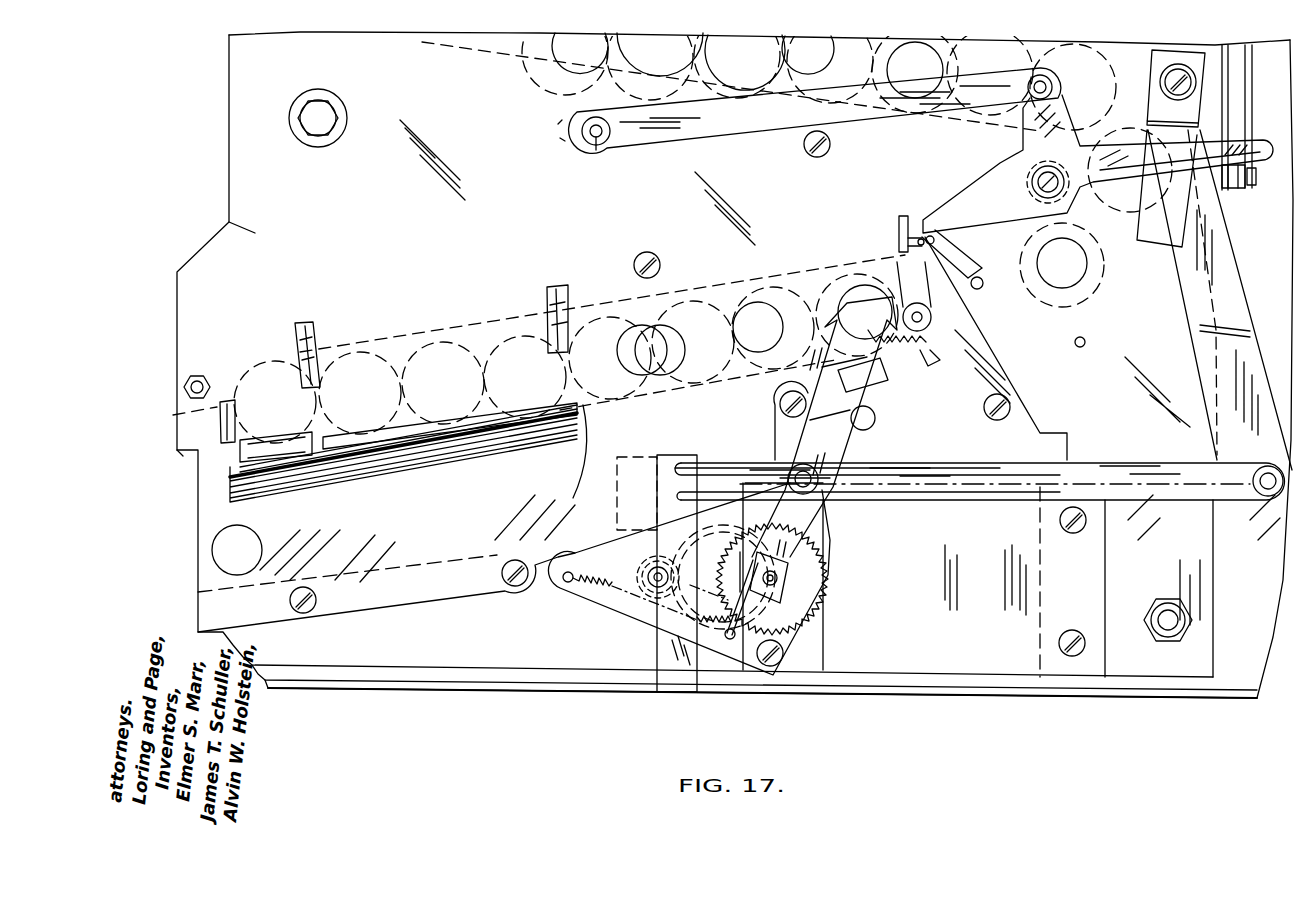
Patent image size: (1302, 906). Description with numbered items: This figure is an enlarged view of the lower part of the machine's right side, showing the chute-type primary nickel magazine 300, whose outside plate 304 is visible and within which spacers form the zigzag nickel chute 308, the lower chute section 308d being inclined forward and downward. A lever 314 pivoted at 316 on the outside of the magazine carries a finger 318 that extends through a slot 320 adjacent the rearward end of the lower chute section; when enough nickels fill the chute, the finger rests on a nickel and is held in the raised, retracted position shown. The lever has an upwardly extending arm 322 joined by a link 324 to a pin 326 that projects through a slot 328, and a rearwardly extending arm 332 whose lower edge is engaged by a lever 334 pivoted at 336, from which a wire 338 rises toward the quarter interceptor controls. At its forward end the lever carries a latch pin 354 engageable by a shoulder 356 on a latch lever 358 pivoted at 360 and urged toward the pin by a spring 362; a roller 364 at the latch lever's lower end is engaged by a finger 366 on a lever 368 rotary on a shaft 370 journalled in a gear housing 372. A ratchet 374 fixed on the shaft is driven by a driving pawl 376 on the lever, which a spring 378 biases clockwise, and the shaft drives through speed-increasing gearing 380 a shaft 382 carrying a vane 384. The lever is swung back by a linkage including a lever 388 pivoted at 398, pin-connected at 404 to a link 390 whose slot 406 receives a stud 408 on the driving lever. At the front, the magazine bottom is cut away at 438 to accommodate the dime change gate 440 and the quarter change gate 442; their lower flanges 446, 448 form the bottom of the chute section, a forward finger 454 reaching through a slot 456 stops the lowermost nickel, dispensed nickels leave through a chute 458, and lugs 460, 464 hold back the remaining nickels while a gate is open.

The primary nickel magazine 300 is at (219, 143).
The outside plate 304 is at (229, 222).
The zigzag nickel chute 308 is at (535, 62).
The lower chute section 308d is at (465, 330).
The lever 314 is at (998, 158).
The pivot 316 is at (1062, 190).
The finger 318 is at (950, 247).
The slot 320 is at (983, 283).
The upwardly extending arm 322 is at (1052, 90).
The link 324 is at (718, 128).
The pin 326 is at (598, 146).
The slot 328 is at (558, 140).
The rearwardly extending arm 332 is at (1258, 140).
The lever 334 is at (1236, 190).
The pivot 336 is at (1257, 178).
The wire 338 is at (1254, 78).
The latch pin 354 is at (934, 238).
The shoulder 356 is at (905, 246).
The latch lever 358 is at (900, 218).
The pivot 360 is at (933, 316).
The spring 362 is at (925, 370).
The roller 364 is at (880, 412).
The finger 366 is at (866, 430).
The lever 368 is at (805, 440).
The shaft 370 is at (784, 577).
The gear housing 372 is at (795, 655).
The ratchet 374 is at (818, 600).
The driving pawl 376 is at (812, 532).
The spring 378 is at (570, 584).
The speed-increasing gearing 380 is at (639, 564).
The shaft 382 is at (670, 572).
The vane 384 is at (658, 648).
The lever 388 is at (1160, 98).
The link 390 is at (1158, 494).
The pivot 398 is at (1165, 72).
The pin connection 404 is at (1268, 497).
The slot 406 is at (695, 463).
The stud 408 is at (820, 478).
The cut-away 438 is at (180, 455).
The dime change gate 440 is at (261, 441).
The quarter change gate 442 is at (478, 403).
The lower flange 446 is at (305, 455).
The lower flange 448 is at (430, 438).
The forward finger 454 is at (220, 430).
The slot 456 is at (228, 402).
The chute 458 is at (358, 568).
The lug 460 is at (320, 340).
The lug 464 is at (548, 310).